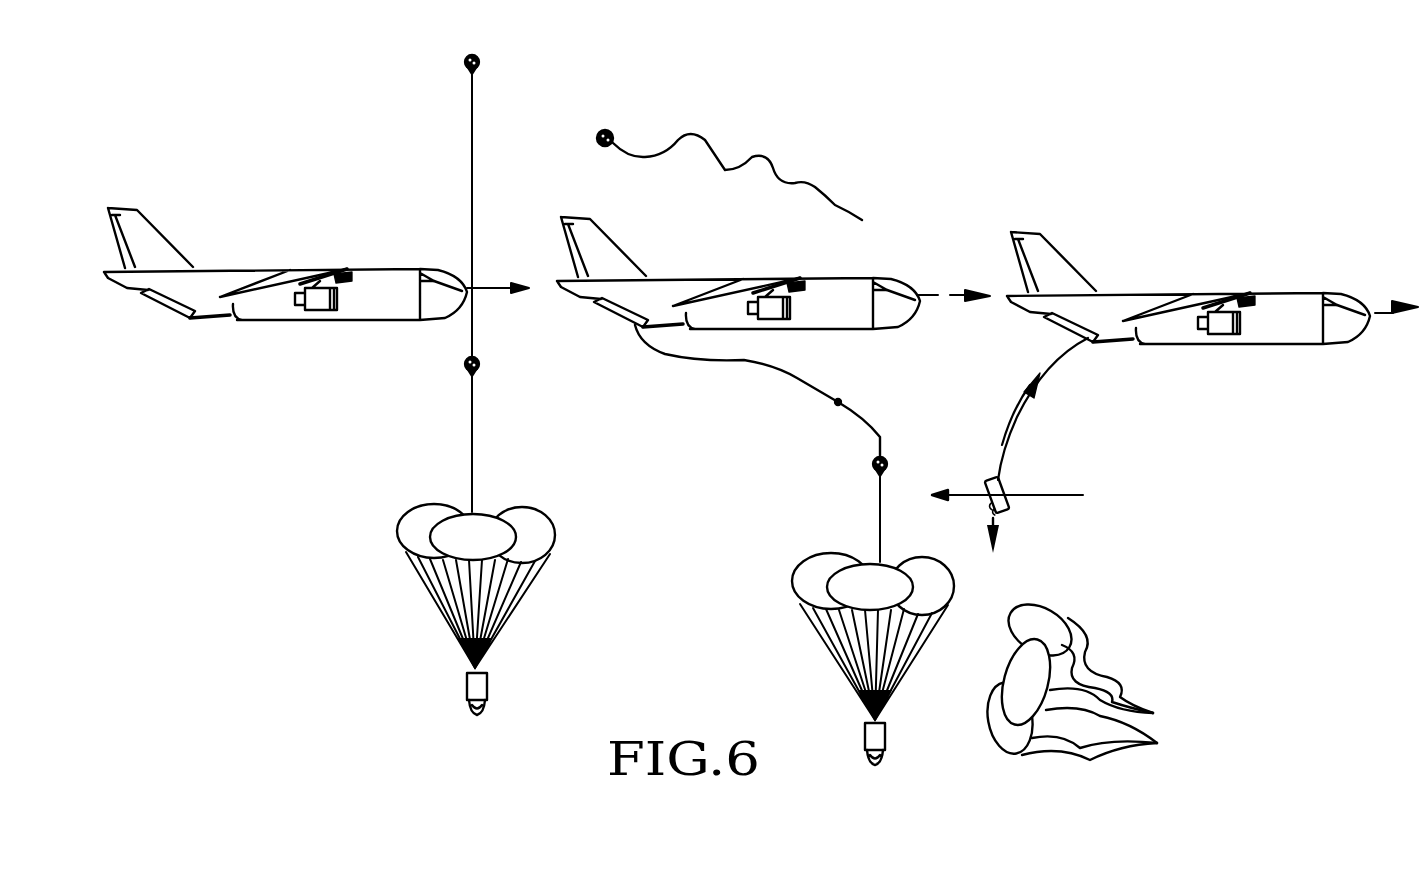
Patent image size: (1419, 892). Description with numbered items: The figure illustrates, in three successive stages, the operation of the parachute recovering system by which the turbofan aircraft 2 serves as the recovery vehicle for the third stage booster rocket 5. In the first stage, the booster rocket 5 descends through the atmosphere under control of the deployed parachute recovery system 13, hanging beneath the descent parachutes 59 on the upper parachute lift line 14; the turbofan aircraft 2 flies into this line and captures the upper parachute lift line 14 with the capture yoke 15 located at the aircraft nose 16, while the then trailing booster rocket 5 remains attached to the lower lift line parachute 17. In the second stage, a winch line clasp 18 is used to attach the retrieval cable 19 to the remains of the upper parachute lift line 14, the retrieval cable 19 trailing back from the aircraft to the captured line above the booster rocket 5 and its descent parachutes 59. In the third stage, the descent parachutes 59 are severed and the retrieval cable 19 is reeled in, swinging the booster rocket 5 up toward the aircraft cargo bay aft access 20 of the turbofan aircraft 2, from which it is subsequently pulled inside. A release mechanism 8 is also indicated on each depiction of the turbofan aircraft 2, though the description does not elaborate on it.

The turbofan aircraft 2 is at (320, 270).
The third stage booster rocket 5 is at (465, 688).
The release mechanism 8 is at (343, 275).
The deployed parachute recovery system 13 is at (460, 118).
The upper parachute lift line 14 is at (472, 218).
The capture yoke 15 is at (467, 287).
The aircraft nose 16 is at (457, 320).
The lower lift line parachute 17 is at (460, 375).
The winch line clasp 18 is at (836, 404).
The retrieval cable 19 is at (797, 378).
The aircraft cargo bay aft access 20 is at (1100, 338).
The descent parachutes 59 is at (413, 518).